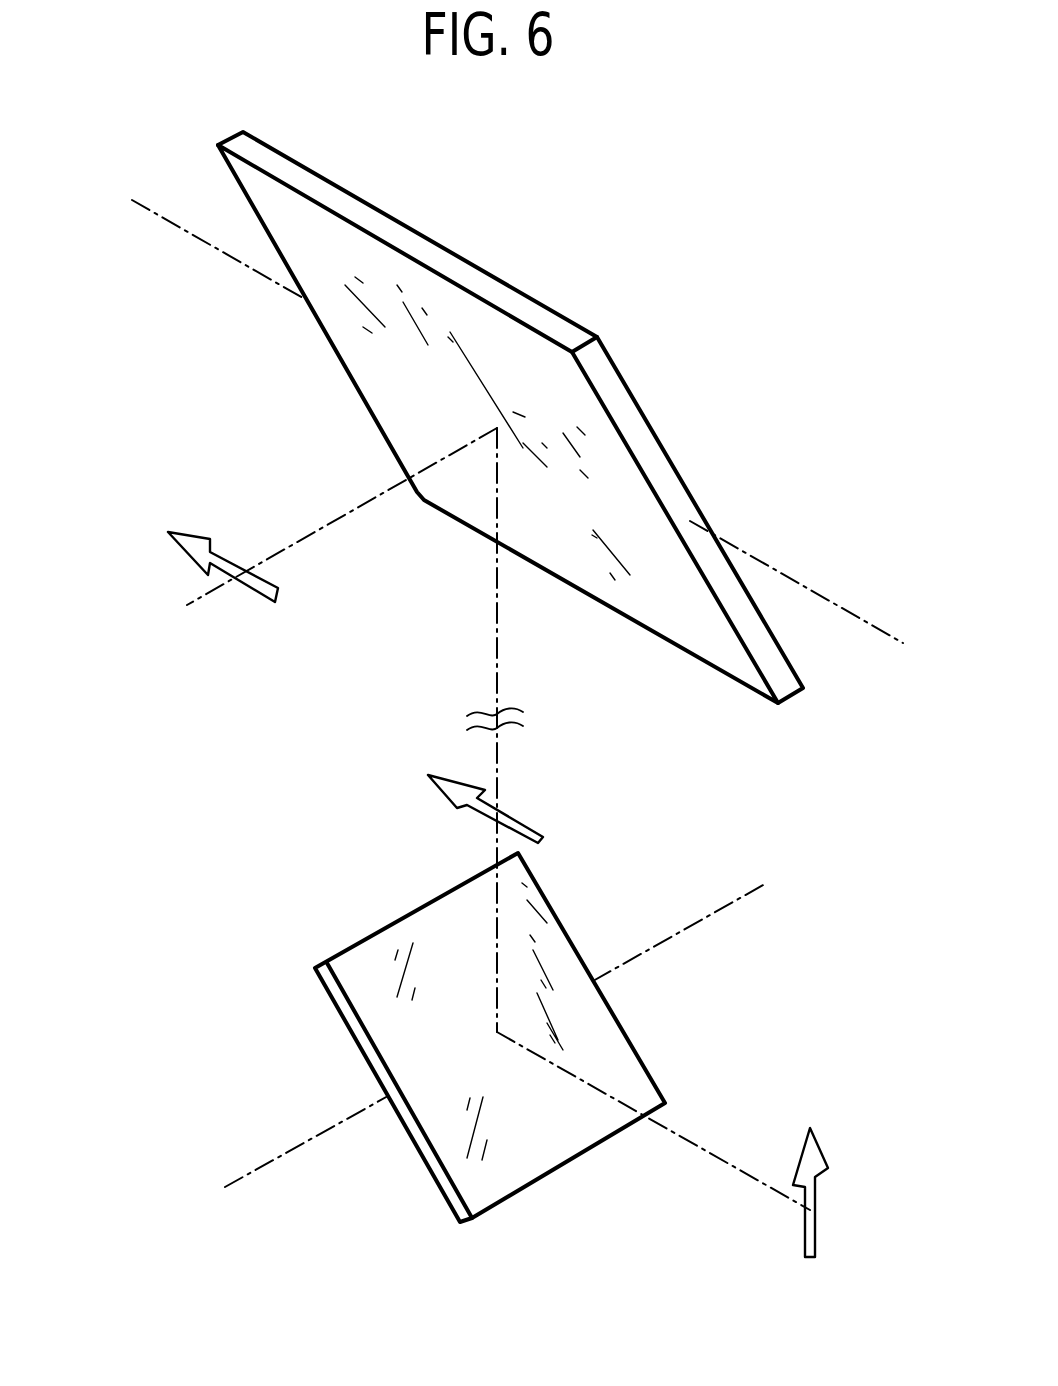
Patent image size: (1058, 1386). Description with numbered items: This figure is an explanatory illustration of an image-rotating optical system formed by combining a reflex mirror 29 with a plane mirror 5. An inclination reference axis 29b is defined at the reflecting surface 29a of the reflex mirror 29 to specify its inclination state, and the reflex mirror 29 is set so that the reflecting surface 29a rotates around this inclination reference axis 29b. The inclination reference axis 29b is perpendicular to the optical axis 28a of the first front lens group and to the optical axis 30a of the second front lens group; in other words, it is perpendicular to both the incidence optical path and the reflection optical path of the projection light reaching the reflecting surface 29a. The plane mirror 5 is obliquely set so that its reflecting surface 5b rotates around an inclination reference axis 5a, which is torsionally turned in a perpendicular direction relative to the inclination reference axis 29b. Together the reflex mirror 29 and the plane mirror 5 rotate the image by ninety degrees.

The plane mirror 5 is at (612, 359).
The inclination reference axis 5a is at (837, 607).
The reflecting surface 5b is at (392, 363).
The optical axis 28a is at (498, 762).
The reflex mirror 29 is at (322, 987).
The reflecting surface 29a is at (518, 1163).
The inclination reference axis 29b is at (288, 1152).
The optical axis 30a is at (698, 1147).